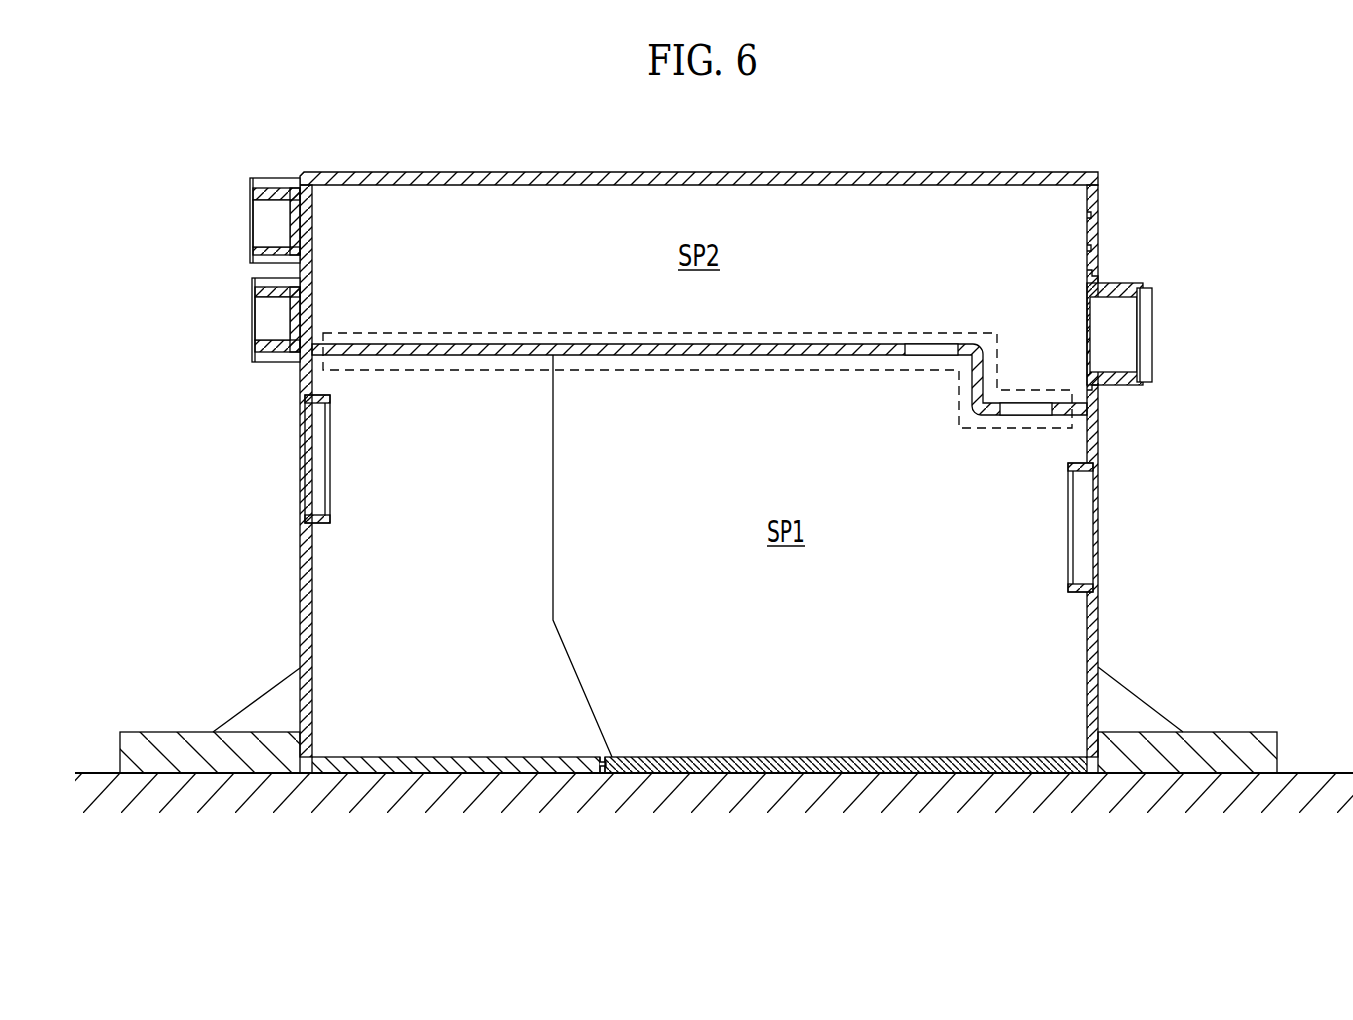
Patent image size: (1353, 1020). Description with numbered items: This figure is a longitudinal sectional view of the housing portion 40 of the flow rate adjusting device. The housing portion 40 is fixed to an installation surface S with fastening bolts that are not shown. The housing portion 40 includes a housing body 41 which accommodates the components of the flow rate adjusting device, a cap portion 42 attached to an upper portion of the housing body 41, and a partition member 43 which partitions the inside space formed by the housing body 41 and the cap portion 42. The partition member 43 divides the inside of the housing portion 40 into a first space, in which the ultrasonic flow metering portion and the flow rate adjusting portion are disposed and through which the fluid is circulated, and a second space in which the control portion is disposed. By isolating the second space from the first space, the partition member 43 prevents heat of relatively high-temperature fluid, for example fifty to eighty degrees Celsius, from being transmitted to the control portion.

The housing portion 40 is at (607, 460).
The housing body 41 is at (300, 378).
The cap portion 42 is at (252, 180).
The partition member 43 is at (631, 353).
The installation surface S is at (92, 773).